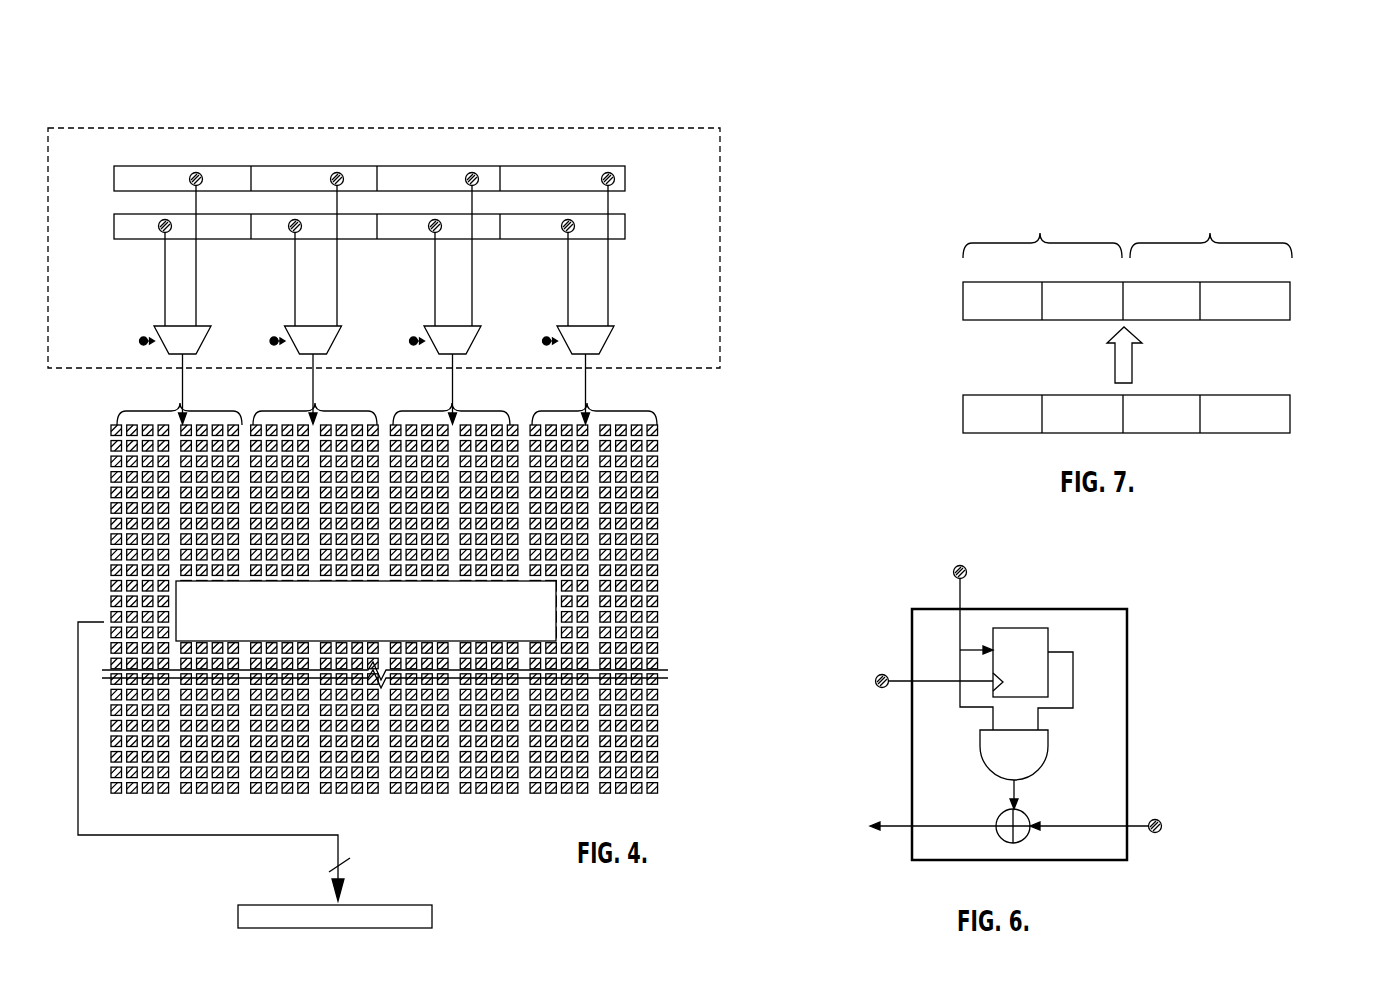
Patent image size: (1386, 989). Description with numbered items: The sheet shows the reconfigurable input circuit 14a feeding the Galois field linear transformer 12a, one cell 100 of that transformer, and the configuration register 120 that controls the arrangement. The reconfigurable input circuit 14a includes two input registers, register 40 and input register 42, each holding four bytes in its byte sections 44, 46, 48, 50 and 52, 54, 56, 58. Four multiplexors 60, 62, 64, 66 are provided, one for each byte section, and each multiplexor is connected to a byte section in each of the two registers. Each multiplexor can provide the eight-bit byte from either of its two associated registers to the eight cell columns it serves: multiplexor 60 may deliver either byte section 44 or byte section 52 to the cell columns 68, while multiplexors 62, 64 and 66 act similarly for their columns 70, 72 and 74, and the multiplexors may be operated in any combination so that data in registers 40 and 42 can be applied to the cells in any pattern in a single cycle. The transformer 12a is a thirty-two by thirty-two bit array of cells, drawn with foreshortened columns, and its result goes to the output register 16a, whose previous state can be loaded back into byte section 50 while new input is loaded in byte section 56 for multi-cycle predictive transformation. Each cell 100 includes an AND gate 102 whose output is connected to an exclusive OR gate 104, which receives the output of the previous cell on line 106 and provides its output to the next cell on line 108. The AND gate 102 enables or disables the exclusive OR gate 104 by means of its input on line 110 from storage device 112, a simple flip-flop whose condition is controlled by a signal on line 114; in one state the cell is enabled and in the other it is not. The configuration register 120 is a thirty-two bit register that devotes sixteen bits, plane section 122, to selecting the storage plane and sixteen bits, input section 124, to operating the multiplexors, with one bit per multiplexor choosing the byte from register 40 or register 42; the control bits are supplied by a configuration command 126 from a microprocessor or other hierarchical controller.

In FIG. 4, the Galois field linear transformer 12a is at (426, 573).
In FIG. 4, the reconfigurable input circuit 14a is at (650, 112).
In FIG. 4, the output register 16a is at (428, 904).
In FIG. 4, the input register 40 is at (632, 221).
In FIG. 4, the input register 42 is at (632, 168).
In FIG. 4, the byte section 44 is at (520, 240).
In FIG. 4, the byte section 46 is at (418, 240).
In FIG. 4, the byte section 48 is at (278, 239).
In FIG. 4, the byte section 50 is at (126, 239).
In FIG. 4, the byte section 52 is at (539, 166).
In FIG. 4, the byte section 54 is at (430, 166).
In FIG. 4, the byte section 56 is at (305, 166).
In FIG. 4, the byte section 58 is at (193, 165).
In FIG. 4, the multiplexor 60 is at (582, 322).
In FIG. 4, the multiplexor 62 is at (445, 322).
In FIG. 4, the multiplexor 64 is at (310, 322).
In FIG. 4, the multiplexor 66 is at (177, 322).
In FIG. 4, the cell columns 68 is at (588, 401).
In FIG. 4, the cell columns 70 is at (453, 401).
In FIG. 4, the cell columns 72 is at (315, 401).
In FIG. 4, the cell columns 74 is at (183, 401).
In FIG. 6, the cell 100 is at (1125, 590).
In FIG. 6, the AND gate 102 is at (1049, 746).
In FIG. 6, the exclusive OR gate 104 is at (1027, 812).
In FIG. 6, the line 106 is at (1137, 824).
In FIG. 6, the line 108 is at (898, 825).
In FIG. 6, the line 110 is at (1073, 690).
In FIG. 6, the storage device 112 is at (1048, 640).
In FIG. 6, the line 114 is at (883, 672).
In FIG. 7, the configuration register 120 is at (1290, 313).
In FIG. 7, the plane section 122 is at (1042, 230).
In FIG. 7, the input section 124 is at (1211, 230).
In FIG. 7, the configuration command 126 is at (1290, 415).